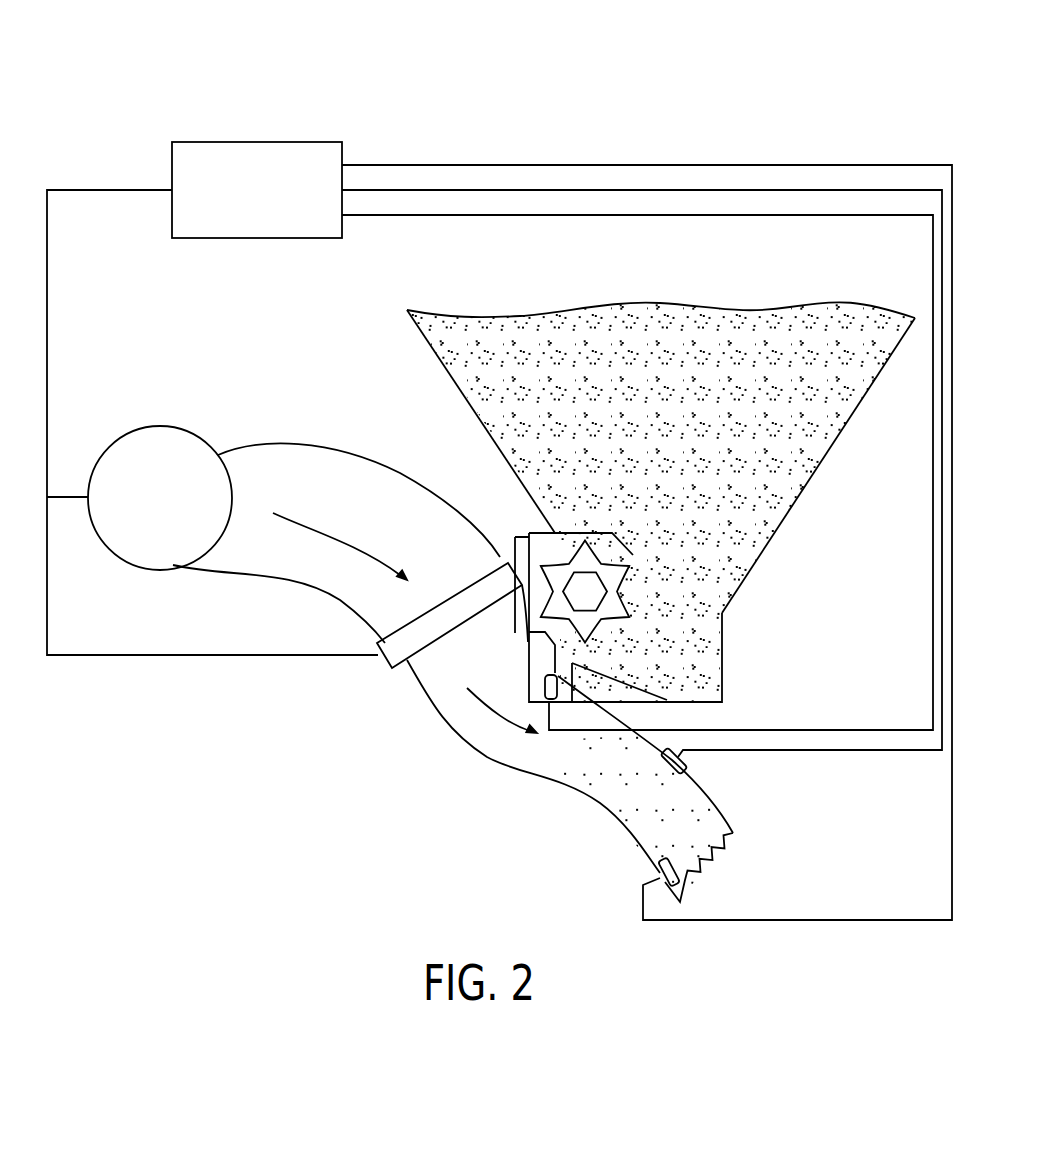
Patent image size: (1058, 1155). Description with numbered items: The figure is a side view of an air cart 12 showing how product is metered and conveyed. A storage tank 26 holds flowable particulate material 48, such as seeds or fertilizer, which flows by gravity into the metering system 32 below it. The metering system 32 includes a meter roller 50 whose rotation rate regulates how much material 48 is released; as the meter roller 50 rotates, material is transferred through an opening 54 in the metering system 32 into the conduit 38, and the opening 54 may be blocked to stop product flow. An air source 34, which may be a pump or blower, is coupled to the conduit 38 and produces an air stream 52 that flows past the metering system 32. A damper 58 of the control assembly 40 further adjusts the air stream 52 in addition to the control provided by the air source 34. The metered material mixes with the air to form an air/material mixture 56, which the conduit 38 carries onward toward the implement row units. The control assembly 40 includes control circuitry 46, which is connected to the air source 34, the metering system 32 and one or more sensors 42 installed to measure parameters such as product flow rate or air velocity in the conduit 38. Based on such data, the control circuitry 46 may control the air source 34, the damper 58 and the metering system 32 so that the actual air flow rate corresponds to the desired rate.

The air cart 12 is at (280, 63).
The control assembly 40 is at (237, 122).
The control circuitry 46 is at (297, 142).
The storage tank 26 is at (437, 350).
The flowable particulate material 48 is at (833, 417).
The air source 34 is at (158, 427).
The air stream 52 is at (340, 530).
The damper 58 is at (387, 662).
The metering system 32 is at (513, 527).
The meter roller 50 is at (529, 545).
The opening 54 is at (577, 692).
The conduit 38 is at (487, 757).
The air/material mixture 56 is at (630, 806).
The sensors 42 is at (545, 690).